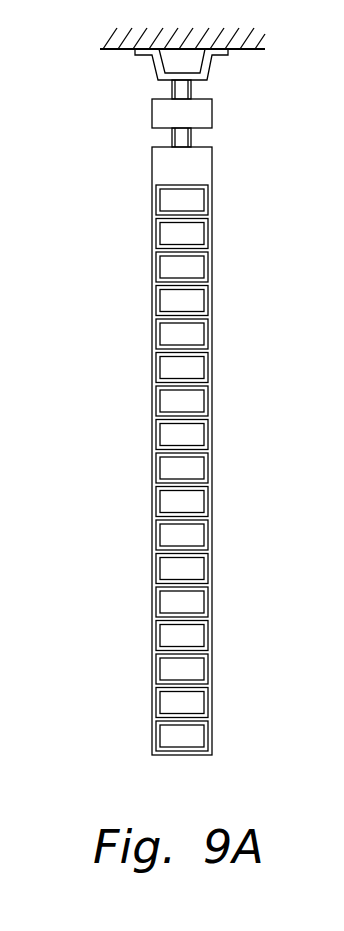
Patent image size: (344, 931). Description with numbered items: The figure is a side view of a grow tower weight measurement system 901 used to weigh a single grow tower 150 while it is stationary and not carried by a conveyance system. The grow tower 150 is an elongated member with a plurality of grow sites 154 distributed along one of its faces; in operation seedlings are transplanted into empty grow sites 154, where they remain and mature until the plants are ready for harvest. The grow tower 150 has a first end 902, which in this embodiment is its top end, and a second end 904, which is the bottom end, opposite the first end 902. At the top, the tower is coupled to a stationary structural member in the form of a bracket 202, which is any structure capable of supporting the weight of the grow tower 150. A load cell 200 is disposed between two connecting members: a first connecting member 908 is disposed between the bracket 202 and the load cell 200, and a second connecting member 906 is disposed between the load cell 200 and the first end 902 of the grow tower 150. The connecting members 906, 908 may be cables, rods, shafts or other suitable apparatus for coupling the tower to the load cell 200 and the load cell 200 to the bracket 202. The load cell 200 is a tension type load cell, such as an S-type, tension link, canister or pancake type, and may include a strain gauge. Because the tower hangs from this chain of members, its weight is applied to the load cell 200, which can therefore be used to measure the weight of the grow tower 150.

The grow tower weight measurement system 901 is at (182, 402).
The first end 902 is at (131, 162).
The bracket 202 is at (154, 62).
The first connecting member 908 is at (191, 92).
The load cell 200 is at (152, 112).
The second connecting member 906 is at (191, 140).
The grow tower 150 is at (148, 332).
The grow sites 154 is at (170, 468).
The second end 904 is at (135, 745).